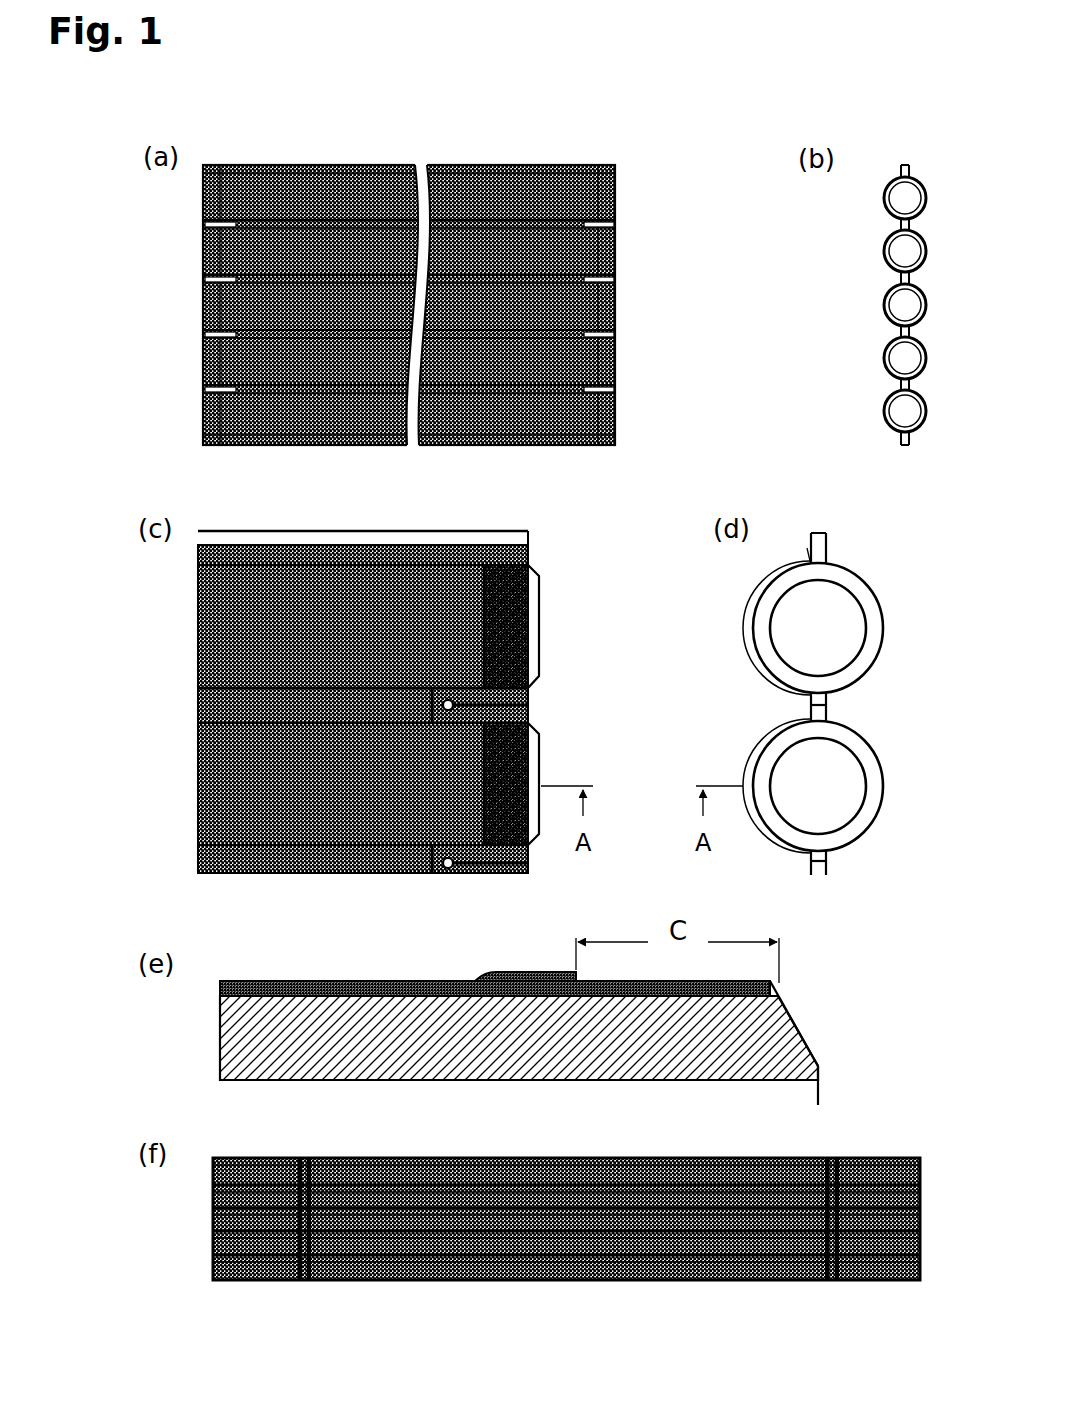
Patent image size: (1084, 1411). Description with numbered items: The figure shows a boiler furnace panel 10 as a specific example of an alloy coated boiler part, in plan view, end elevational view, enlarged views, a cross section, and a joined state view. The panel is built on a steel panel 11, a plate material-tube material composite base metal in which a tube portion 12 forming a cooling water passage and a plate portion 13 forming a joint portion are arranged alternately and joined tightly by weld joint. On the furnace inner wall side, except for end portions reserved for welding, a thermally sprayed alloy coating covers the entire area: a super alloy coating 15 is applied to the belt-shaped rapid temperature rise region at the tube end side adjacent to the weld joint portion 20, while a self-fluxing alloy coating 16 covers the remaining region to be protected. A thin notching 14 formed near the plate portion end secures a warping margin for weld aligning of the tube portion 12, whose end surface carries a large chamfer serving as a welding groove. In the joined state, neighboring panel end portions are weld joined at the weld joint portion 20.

The boiler furnace panel 10 is at (647, 247).
The steel panel 11 is at (869, 719).
The tube portion 12 is at (532, 600).
The plate portion 13 is at (820, 700).
The thin notching 14 is at (522, 703).
The super alloy coating 15 is at (512, 656).
The self-fluxing alloy coating 16 is at (322, 800).
The weld joint portion 20 is at (297, 1148).